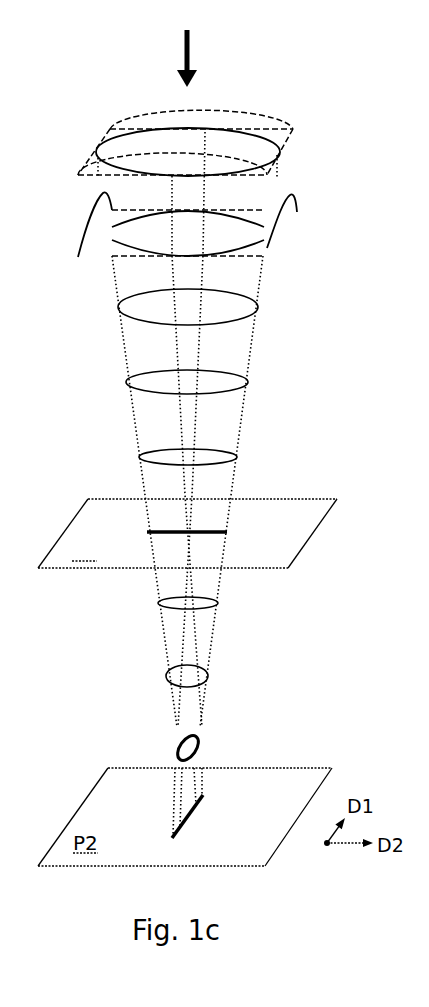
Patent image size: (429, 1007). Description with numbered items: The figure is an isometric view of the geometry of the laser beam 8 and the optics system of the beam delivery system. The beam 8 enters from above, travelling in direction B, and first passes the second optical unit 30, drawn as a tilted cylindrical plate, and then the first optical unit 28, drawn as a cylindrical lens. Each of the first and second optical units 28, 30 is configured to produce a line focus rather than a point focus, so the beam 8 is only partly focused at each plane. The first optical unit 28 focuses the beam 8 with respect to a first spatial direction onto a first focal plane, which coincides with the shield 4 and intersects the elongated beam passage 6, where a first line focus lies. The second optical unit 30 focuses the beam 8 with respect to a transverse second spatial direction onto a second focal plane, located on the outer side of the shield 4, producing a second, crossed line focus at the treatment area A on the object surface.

The second optical unit 30 is at (303, 147).
The first optical unit 28 is at (303, 228).
The laser beam 8 is at (107, 360).
The elongated beam passage 6 is at (160, 515).
The shield 4 is at (293, 542).
The treatment area A is at (150, 812).
The beam direction B is at (197, 58).